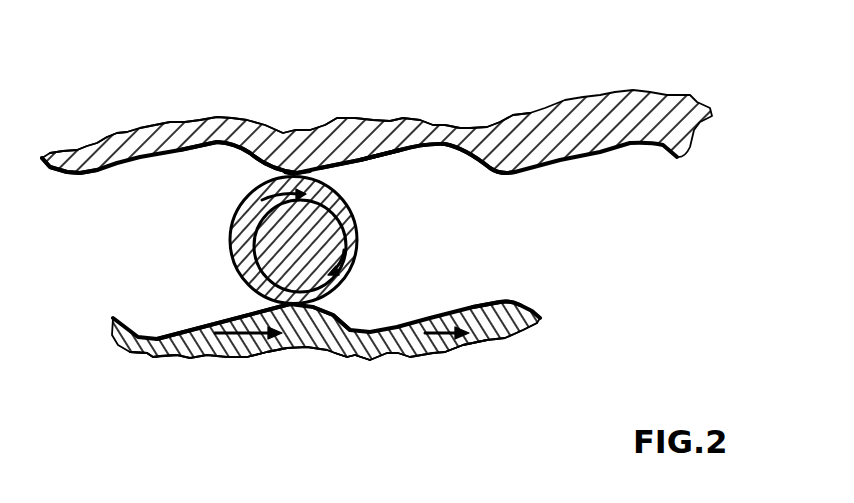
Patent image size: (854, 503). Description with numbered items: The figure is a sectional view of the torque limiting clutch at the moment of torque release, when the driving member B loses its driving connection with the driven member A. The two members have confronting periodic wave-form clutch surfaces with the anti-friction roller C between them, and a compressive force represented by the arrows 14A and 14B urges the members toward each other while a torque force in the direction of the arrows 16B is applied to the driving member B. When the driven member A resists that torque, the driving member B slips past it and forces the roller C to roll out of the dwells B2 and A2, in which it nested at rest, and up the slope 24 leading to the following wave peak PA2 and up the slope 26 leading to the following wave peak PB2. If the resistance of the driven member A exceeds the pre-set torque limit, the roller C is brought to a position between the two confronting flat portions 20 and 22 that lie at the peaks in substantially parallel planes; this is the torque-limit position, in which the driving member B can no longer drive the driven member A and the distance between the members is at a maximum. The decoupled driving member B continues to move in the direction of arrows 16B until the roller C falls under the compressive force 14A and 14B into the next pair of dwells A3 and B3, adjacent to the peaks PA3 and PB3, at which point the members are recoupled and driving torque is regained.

The driven member A is at (543, 133).
The driving member B is at (405, 348).
The anti-friction roller C is at (342, 238).
The compressive force arrows 14A is at (135, 120).
The compressive force arrows 14B is at (200, 368).
The torque force arrows 16B is at (258, 341).
The flat portion 20 is at (305, 167).
The flat portion 22 is at (268, 306).
The slope 24 is at (362, 161).
The slope 26 is at (228, 321).
The dwell A2 is at (430, 141).
The dwell A3 is at (222, 143).
The wave peak PA2 is at (296, 176).
The wave peak PA3 is at (81, 175).
The dwell B2 is at (152, 357).
The dwell B3 is at (350, 358).
The wave peak PB2 is at (330, 316).
The wave peak PB3 is at (507, 318).